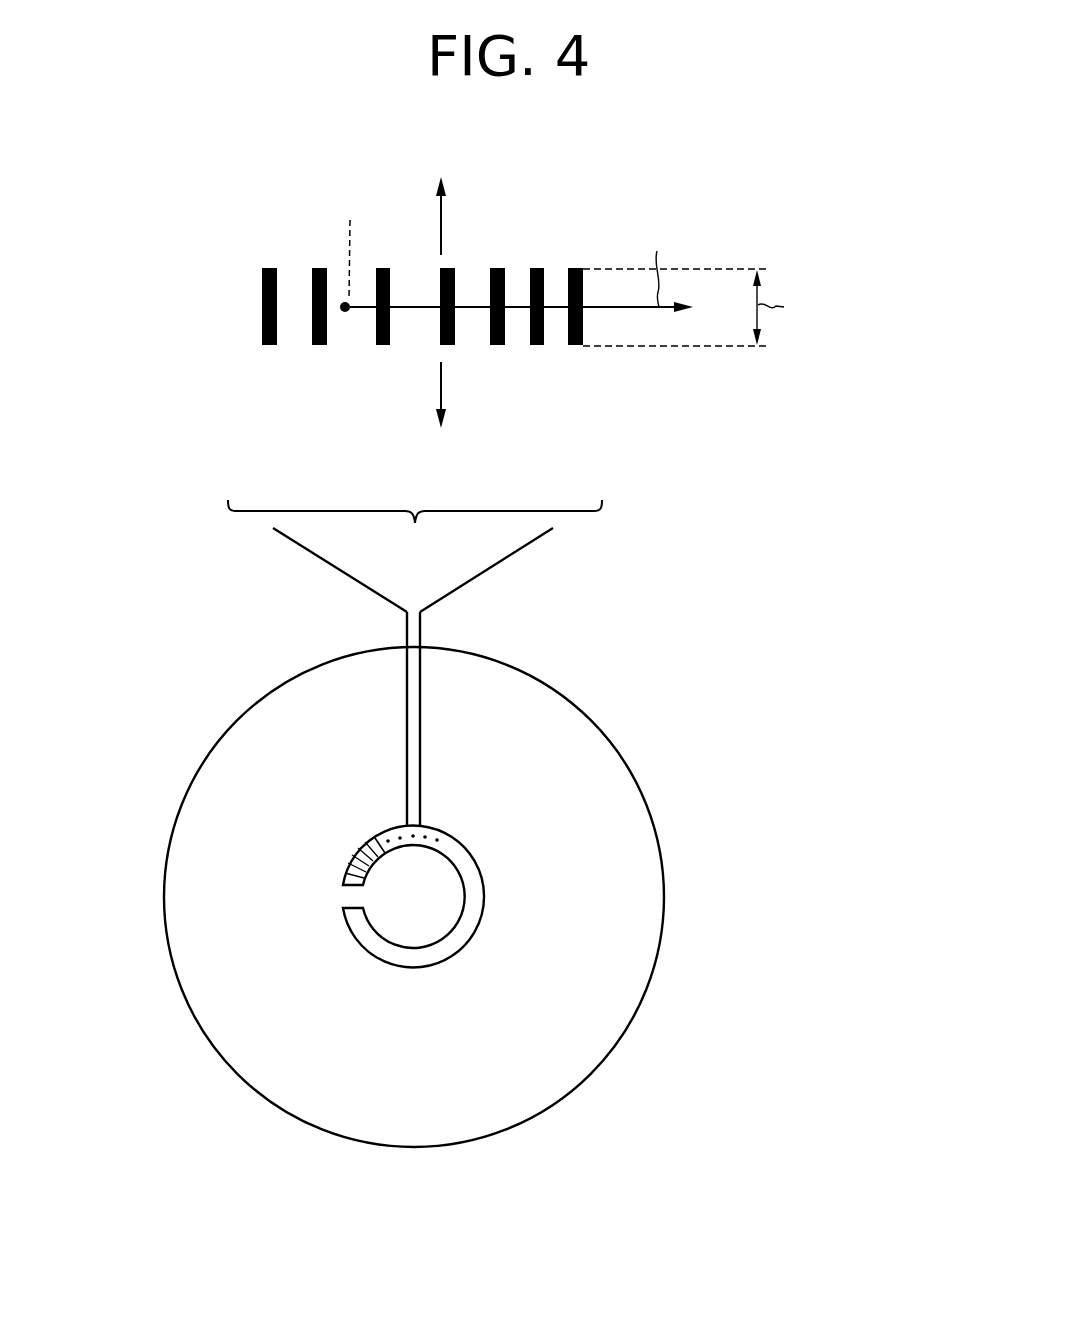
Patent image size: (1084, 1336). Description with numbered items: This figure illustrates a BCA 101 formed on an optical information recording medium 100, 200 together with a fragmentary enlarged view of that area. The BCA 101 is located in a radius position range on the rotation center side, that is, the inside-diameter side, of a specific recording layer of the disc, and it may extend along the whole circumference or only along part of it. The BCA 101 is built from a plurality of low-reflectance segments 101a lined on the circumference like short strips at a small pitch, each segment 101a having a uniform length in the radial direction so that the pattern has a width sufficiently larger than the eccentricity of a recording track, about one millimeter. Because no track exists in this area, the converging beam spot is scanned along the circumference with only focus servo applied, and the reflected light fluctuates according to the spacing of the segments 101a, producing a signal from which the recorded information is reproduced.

The multilayered optical information recording medium 100 is at (512, 897).
The optical disc 200 is at (655, 828).
The BCA 101 is at (496, 624).
The low-reflectance segment 101a is at (171, 353).